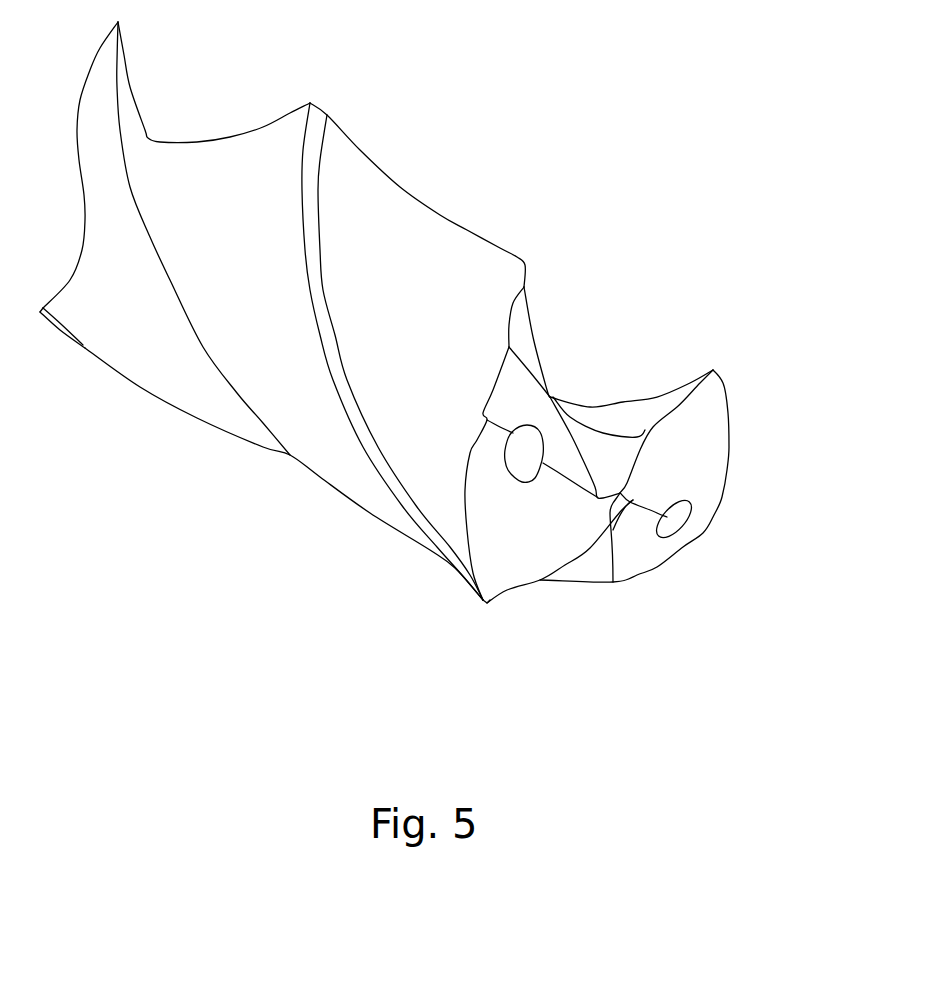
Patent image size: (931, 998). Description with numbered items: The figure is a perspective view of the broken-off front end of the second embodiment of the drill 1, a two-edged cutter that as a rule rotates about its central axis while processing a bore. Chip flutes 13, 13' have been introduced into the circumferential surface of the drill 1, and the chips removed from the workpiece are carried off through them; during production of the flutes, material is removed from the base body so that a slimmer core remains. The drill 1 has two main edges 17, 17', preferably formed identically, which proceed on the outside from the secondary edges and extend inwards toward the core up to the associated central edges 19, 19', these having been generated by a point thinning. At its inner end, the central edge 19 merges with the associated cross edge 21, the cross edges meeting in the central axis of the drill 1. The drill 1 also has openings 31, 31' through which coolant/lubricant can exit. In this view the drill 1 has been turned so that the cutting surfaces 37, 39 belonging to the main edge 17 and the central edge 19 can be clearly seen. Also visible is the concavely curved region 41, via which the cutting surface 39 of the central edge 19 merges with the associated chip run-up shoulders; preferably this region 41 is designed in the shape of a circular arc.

The drill 1 is at (422, 187).
The chip flute 13 is at (631, 433).
The chip flute 13' is at (183, 163).
The main edge 17 is at (685, 462).
The main edge 17' is at (500, 646).
The central edge 19 is at (725, 431).
The central edge 19' is at (572, 587).
The cross edge 21 is at (628, 503).
The opening 31 is at (720, 539).
The opening 31' is at (542, 458).
The cutting surface 37 is at (653, 410).
The cutting surface 39 is at (615, 448).
The concavely curved region 41 is at (620, 493).